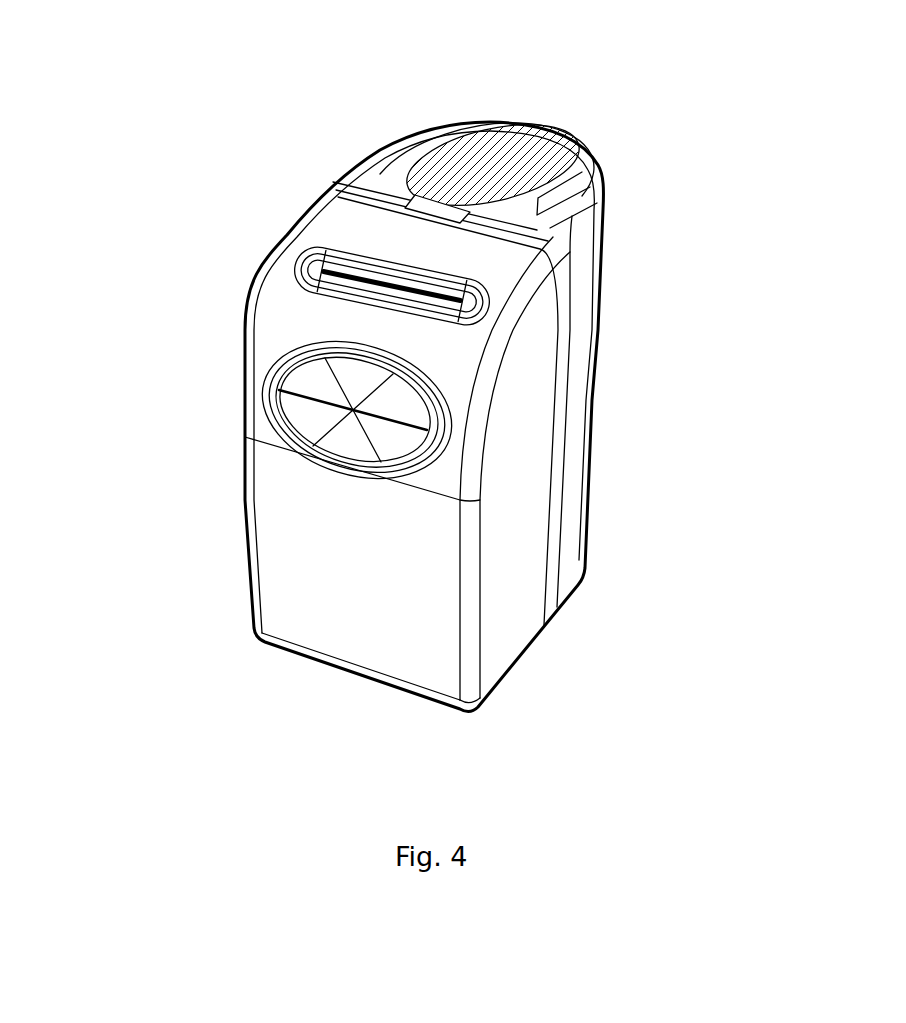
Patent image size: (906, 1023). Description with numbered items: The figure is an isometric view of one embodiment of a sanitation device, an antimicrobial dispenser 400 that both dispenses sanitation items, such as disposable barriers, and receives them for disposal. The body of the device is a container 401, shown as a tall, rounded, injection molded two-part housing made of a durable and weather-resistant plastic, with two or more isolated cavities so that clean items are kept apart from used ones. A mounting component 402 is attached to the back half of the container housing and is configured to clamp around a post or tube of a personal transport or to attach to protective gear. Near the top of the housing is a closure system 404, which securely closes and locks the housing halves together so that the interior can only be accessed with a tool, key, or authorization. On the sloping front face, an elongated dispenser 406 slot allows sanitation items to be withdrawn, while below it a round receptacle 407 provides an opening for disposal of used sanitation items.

The dispenser 400 is at (509, 82).
The container 401 is at (268, 513).
The mounting component 402 is at (597, 182).
The closure system 404 is at (420, 206).
The dispenser 406 is at (313, 265).
The receptacle 407 is at (293, 381).